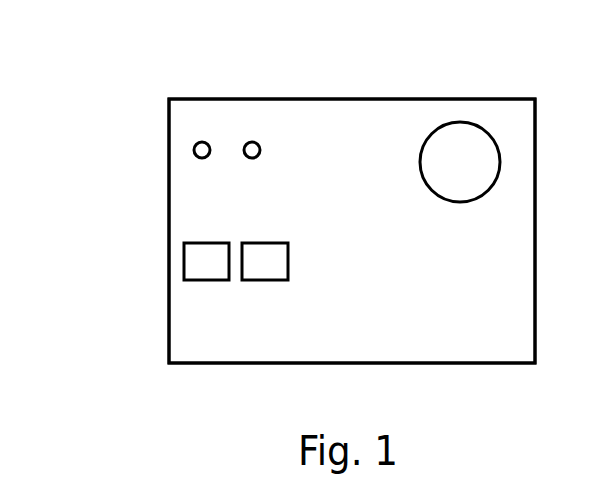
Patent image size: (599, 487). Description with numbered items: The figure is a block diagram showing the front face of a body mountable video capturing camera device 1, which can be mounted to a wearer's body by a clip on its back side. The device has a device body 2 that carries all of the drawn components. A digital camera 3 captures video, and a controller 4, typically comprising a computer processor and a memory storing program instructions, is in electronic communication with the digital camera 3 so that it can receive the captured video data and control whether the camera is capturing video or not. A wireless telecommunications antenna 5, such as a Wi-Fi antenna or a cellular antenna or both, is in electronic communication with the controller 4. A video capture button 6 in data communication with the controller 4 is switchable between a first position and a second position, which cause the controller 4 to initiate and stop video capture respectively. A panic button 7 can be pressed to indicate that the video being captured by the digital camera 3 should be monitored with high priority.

The body mountable video capturing camera device 1 is at (130, 99).
The device body 2 is at (183, 342).
The digital camera 3 is at (459, 142).
The controller 4 is at (197, 260).
The wireless telecommunications antenna 5 is at (288, 260).
The video capture button 6 is at (202, 141).
The panic button 7 is at (252, 143).